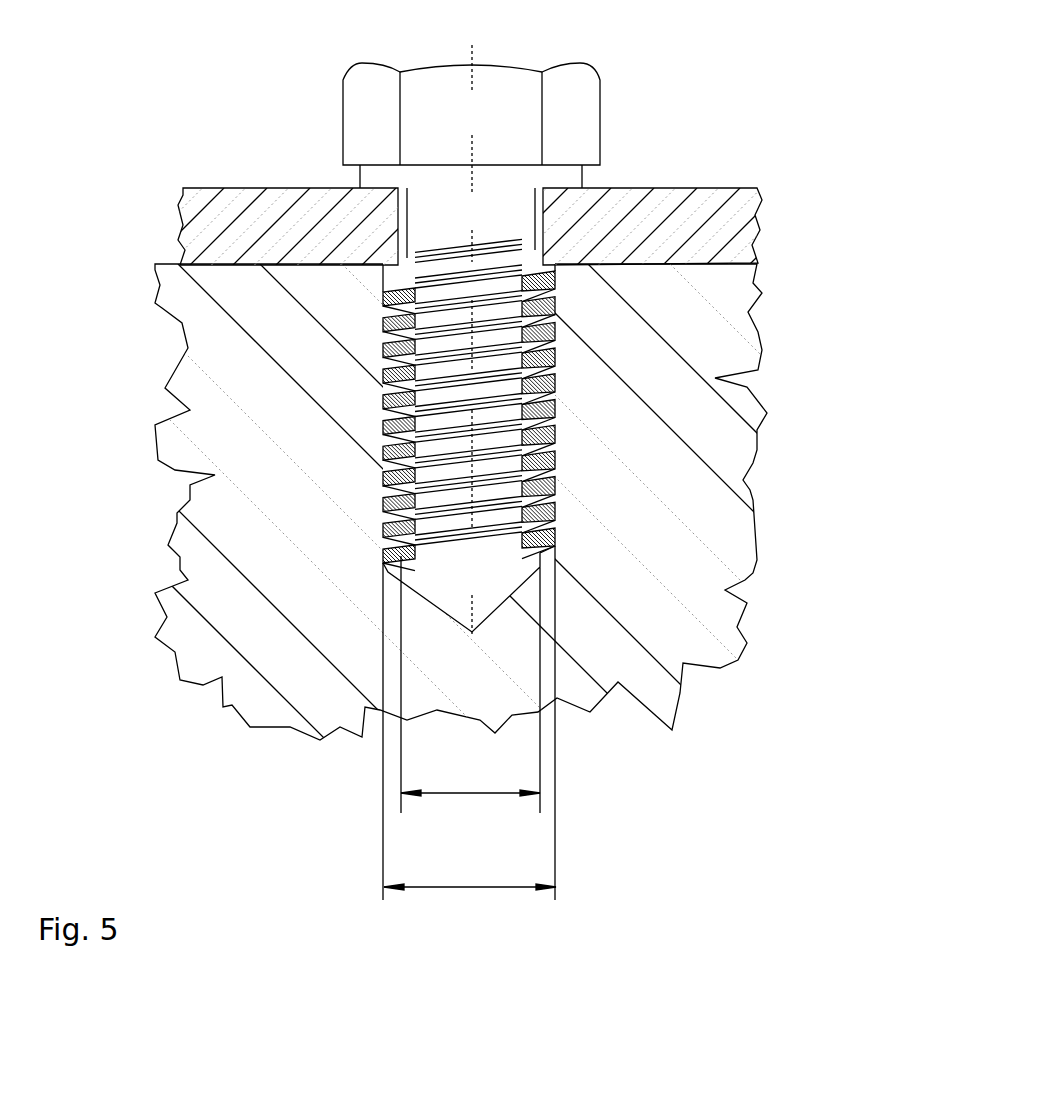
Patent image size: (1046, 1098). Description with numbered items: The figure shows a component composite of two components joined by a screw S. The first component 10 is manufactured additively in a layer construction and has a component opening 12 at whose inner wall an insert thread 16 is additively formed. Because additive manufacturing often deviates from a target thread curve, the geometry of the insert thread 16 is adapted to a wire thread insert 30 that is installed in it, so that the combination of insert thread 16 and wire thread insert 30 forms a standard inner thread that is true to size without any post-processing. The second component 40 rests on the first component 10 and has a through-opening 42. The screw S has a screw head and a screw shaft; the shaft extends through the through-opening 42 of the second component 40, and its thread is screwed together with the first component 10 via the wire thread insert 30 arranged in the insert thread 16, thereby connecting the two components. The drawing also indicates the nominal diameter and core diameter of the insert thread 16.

The screw S is at (430, 92).
The second component 40 is at (240, 198).
The through-opening 42 is at (545, 213).
The insert thread 16 is at (555, 340).
The wire thread insert 30 is at (555, 412).
The component 10 is at (708, 491).
The component opening 12 is at (507, 585).